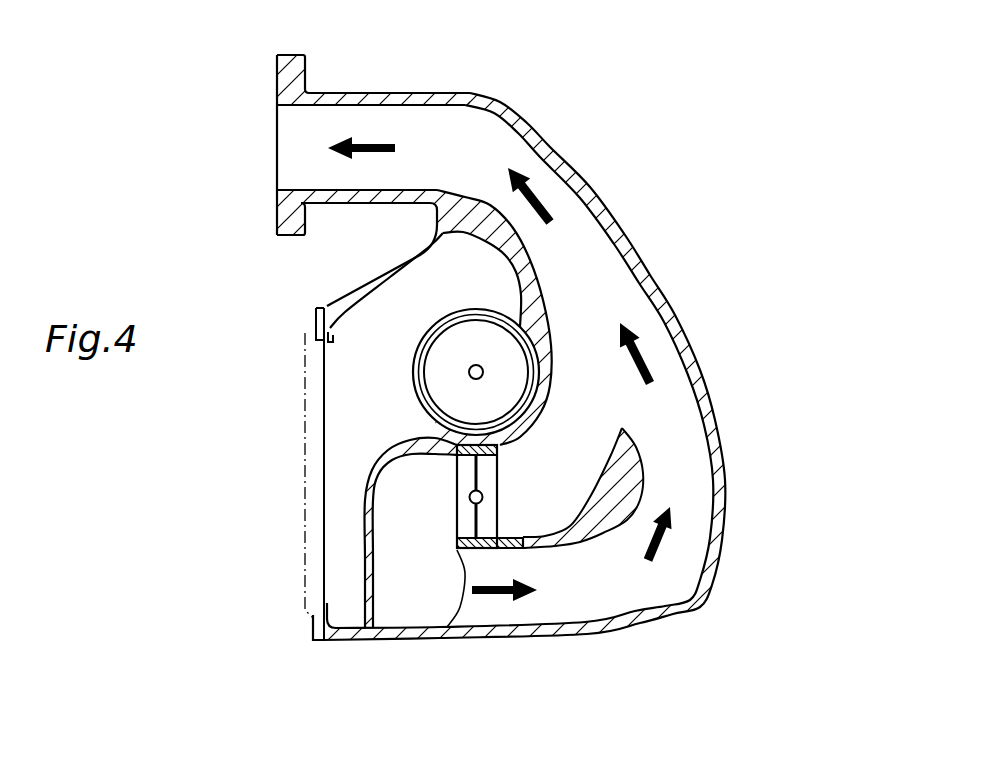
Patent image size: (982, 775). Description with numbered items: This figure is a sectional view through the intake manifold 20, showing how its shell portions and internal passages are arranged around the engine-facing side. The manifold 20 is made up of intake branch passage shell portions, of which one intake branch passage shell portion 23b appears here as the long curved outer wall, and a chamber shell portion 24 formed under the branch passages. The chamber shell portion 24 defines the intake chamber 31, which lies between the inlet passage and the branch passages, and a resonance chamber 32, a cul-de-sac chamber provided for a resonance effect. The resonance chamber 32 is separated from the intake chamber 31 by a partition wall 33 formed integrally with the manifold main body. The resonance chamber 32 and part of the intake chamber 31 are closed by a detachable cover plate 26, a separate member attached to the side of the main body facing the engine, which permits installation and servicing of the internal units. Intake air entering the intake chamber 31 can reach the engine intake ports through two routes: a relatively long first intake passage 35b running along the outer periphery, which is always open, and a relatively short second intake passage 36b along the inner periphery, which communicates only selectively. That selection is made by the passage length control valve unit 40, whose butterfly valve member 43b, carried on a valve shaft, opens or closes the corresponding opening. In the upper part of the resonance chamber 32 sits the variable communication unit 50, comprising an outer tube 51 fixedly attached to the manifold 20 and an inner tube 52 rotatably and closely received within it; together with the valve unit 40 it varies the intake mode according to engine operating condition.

The intake manifold 20 is at (570, 68).
The intake branch passage shell portion 23b is at (607, 195).
The chamber shell portion 24 is at (377, 640).
The cover plate 26 is at (305, 578).
The intake chamber 31 is at (392, 617).
The resonance chamber 32 is at (347, 400).
The partition wall 33 is at (363, 540).
The first intake passage 35b is at (620, 603).
The second intake passage 36b is at (603, 467).
The passage length control valve unit 40 is at (453, 517).
The butterfly valve member 43b is at (525, 545).
The variable communication unit 50 is at (410, 348).
The outer tube 51 is at (435, 323).
The inner tube 52 is at (432, 417).